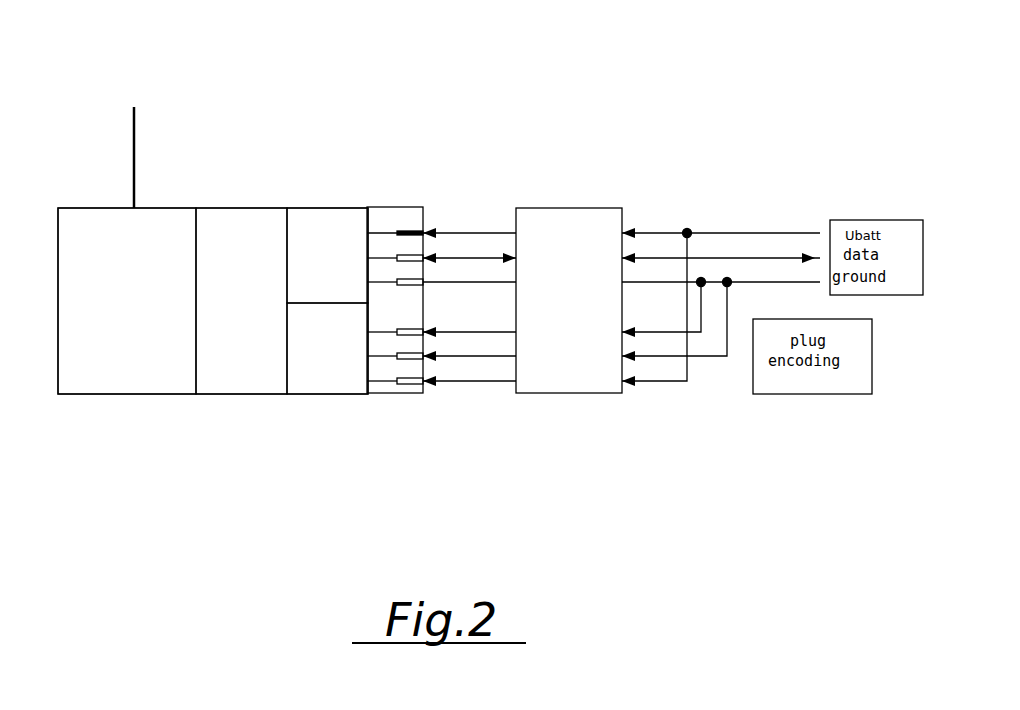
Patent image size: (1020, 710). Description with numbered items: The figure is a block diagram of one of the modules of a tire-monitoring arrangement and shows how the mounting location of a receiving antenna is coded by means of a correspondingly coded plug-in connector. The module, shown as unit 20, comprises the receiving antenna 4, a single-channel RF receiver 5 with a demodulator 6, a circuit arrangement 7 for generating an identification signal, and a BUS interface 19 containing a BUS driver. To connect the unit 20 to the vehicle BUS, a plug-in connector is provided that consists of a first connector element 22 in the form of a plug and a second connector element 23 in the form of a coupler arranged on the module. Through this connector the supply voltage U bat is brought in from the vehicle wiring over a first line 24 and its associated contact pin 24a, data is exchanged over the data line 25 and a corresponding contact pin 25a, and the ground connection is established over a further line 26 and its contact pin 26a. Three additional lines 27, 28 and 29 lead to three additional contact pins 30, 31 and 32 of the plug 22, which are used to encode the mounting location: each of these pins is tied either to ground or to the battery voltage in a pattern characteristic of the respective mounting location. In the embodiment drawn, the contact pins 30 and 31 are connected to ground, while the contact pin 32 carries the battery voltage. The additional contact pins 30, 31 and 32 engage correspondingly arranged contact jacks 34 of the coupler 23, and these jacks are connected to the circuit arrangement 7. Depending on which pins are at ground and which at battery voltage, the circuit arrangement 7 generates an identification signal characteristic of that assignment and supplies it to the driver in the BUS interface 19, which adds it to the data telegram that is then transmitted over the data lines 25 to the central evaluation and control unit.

The receiving antenna 4 is at (134, 143).
The RF receiver 5 is at (140, 336).
The demodulator 6 is at (256, 336).
The circuit arrangement 7 is at (327, 348).
The BUS interface 19 is at (327, 255).
The unit (module) 20 is at (316, 207).
The first connector element (plug) 22 is at (592, 259).
The second connector element (coupler) 23 is at (400, 213).
The first line 24 is at (735, 233).
The contact pin 24a is at (503, 233).
The data line 25 is at (747, 258).
The contact pin 25a is at (480, 258).
The further line 26 is at (772, 282).
The contact pin 26a is at (463, 282).
The additional line 27 is at (650, 332).
The additional line 28 is at (677, 356).
The additional line 29 is at (687, 367).
The additional contact pin 30 is at (472, 332).
The additional contact pin 31 is at (482, 356).
The additional contact pin 32 is at (502, 381).
The contact jacks 34 is at (414, 360).